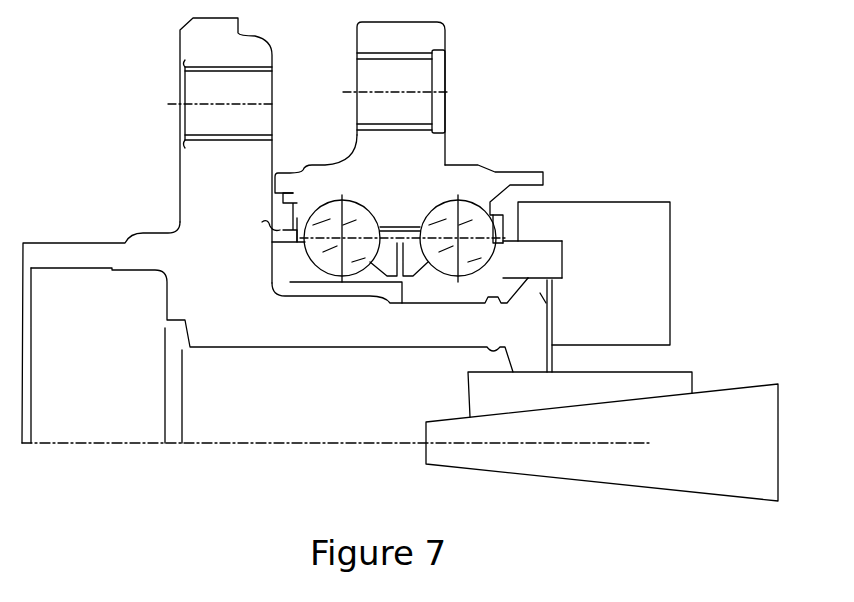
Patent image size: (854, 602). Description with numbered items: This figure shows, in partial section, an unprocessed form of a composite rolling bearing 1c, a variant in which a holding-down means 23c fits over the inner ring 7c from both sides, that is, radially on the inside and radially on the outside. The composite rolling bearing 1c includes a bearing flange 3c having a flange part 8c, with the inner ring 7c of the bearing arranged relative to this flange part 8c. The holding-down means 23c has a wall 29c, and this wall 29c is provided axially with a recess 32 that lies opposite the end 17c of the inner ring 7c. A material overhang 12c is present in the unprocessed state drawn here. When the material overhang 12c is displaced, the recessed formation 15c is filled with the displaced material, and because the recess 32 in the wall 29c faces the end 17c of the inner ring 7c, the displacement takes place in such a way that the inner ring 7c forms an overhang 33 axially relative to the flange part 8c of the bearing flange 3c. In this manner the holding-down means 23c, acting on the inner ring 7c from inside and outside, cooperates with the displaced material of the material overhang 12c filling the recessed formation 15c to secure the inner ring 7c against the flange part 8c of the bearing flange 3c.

The composite rolling bearing 1c is at (618, 64).
The bearing flange 3c is at (197, 185).
The inner ring 7c is at (530, 250).
The flange part 8c is at (353, 330).
The material overhang 12c is at (533, 358).
The recessed formation 15c is at (553, 312).
The end of the inner ring 17c is at (563, 258).
The holding-down means 23c is at (635, 212).
The wall of the holding-down means 29c is at (546, 305).
The recess 32 is at (558, 280).
The overhang 33 is at (553, 248).